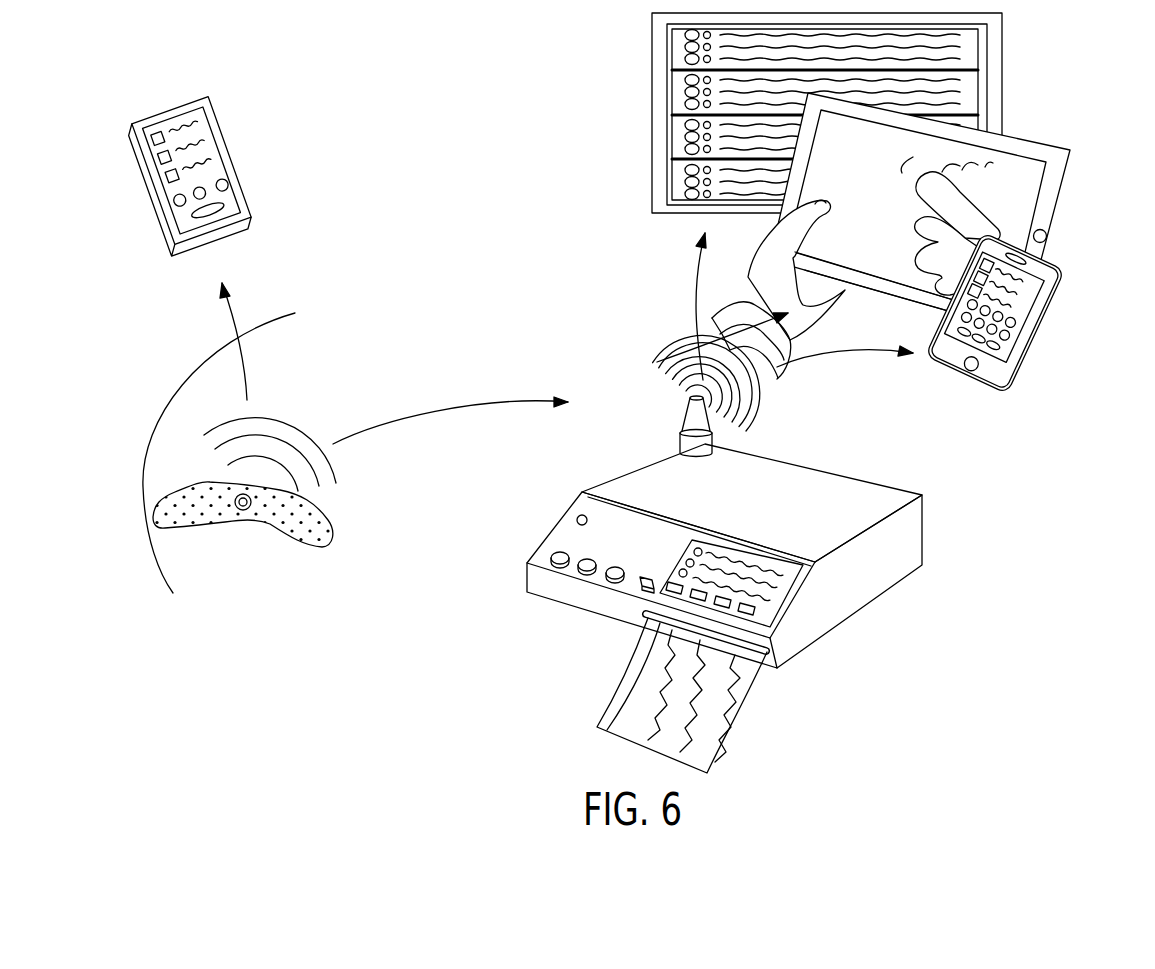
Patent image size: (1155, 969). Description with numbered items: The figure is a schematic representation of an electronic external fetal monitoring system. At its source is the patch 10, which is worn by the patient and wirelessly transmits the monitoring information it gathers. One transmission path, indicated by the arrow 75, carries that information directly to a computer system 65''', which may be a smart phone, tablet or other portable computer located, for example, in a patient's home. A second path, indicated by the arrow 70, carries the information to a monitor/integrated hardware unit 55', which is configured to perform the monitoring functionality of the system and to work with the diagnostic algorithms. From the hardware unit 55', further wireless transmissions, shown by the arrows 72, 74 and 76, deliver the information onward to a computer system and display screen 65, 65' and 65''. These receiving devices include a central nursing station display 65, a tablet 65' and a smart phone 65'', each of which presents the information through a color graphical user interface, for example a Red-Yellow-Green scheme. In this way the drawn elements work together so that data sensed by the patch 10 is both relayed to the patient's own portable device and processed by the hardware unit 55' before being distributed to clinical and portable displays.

The patch 10 is at (327, 520).
The monitor/integrated hardware unit 55' is at (751, 584).
The central nursing station display 65 is at (853, 113).
The tablet 65' is at (943, 212).
The computer system and display screen 65'' is at (1012, 312).
The computer system 65''' is at (214, 177).
The arrow 70 is at (430, 407).
The arrow 72 is at (693, 302).
The arrow 74 is at (753, 381).
The arrow 75 is at (245, 360).
The arrow 76 is at (822, 359).